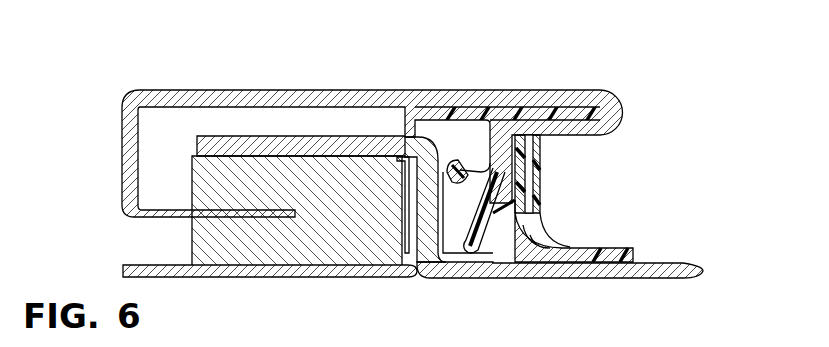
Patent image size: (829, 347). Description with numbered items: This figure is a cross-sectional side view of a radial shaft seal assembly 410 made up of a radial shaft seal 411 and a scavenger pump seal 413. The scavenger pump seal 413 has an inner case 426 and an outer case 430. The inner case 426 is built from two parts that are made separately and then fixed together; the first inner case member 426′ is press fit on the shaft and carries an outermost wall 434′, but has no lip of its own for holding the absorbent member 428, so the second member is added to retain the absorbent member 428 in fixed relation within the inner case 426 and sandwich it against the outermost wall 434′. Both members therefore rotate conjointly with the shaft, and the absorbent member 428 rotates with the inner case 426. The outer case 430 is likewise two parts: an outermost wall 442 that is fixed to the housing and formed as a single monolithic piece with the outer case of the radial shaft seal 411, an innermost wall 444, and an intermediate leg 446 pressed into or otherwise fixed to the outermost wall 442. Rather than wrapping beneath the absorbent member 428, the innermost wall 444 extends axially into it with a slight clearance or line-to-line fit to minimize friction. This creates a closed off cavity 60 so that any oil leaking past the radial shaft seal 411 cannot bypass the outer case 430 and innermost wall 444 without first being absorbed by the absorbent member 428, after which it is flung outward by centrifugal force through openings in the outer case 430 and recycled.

The cavity 60 is at (165, 137).
The radial shaft seal assembly 410 is at (577, 63).
The radial shaft seal 411 is at (624, 99).
The scavenger pump seal 413 is at (272, 69).
The inner case 426 is at (522, 297).
The first inner case member 426′ is at (660, 267).
The absorbent member 428 is at (383, 177).
The outer case 430 is at (188, 91).
The outermost wall 434′ is at (362, 137).
The outermost wall 442 is at (308, 90).
The innermost wall 444 is at (167, 210).
The intermediate leg 446 is at (122, 147).